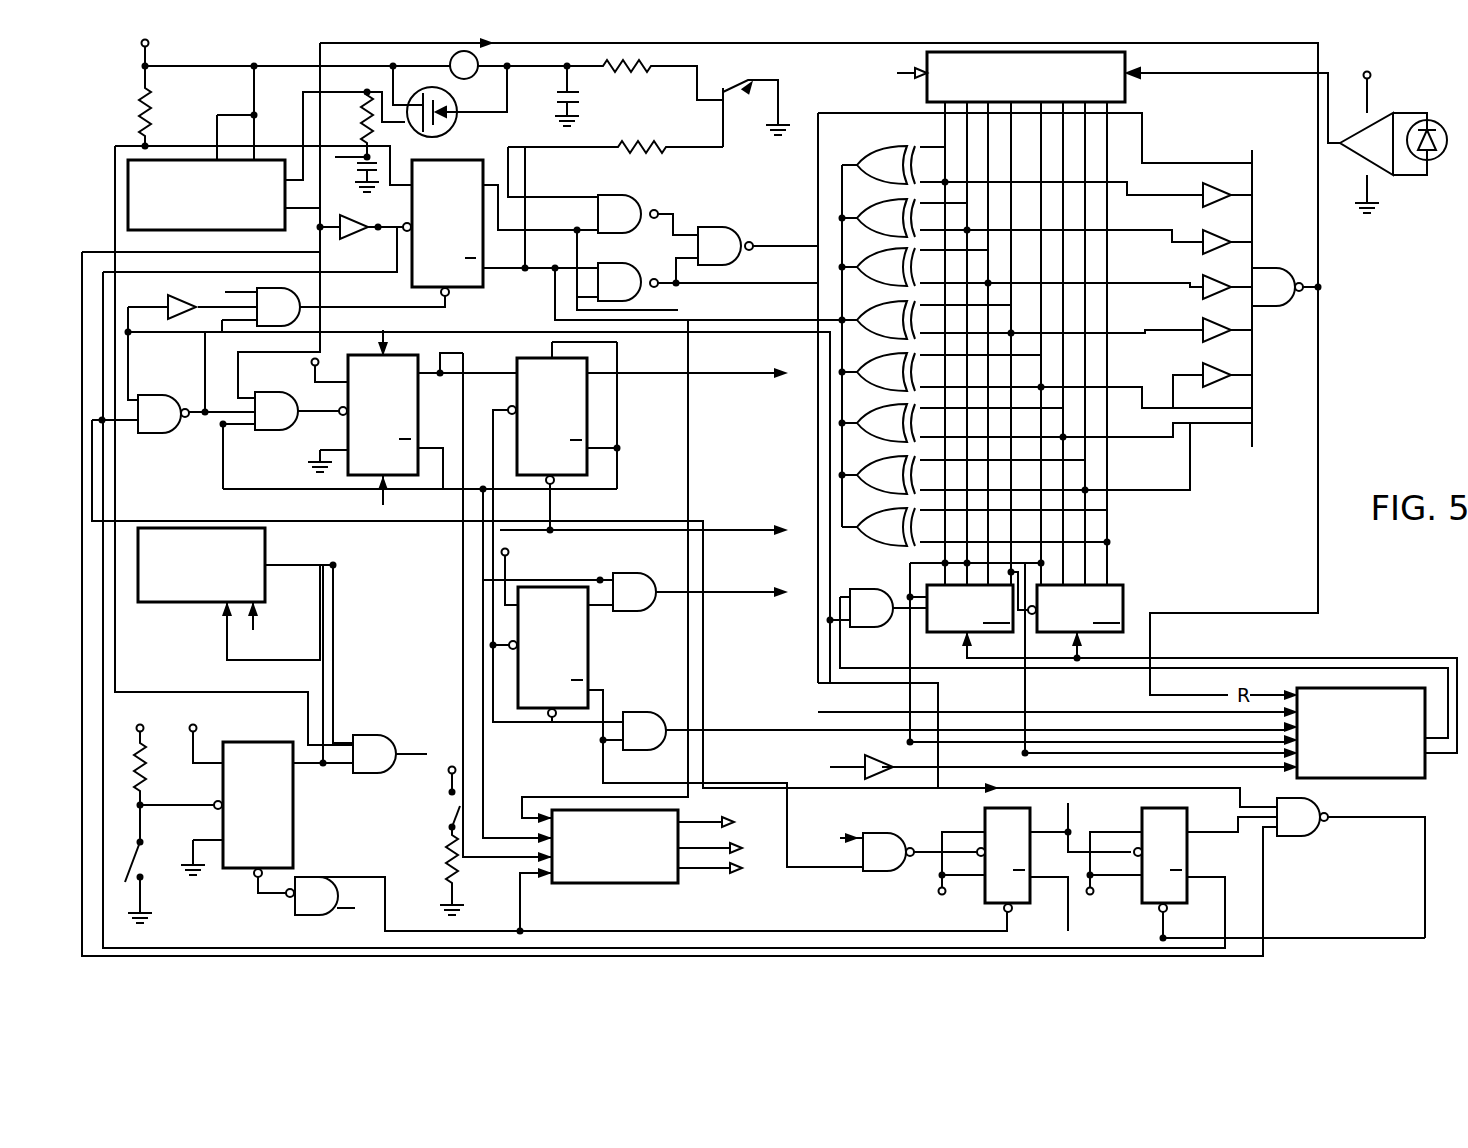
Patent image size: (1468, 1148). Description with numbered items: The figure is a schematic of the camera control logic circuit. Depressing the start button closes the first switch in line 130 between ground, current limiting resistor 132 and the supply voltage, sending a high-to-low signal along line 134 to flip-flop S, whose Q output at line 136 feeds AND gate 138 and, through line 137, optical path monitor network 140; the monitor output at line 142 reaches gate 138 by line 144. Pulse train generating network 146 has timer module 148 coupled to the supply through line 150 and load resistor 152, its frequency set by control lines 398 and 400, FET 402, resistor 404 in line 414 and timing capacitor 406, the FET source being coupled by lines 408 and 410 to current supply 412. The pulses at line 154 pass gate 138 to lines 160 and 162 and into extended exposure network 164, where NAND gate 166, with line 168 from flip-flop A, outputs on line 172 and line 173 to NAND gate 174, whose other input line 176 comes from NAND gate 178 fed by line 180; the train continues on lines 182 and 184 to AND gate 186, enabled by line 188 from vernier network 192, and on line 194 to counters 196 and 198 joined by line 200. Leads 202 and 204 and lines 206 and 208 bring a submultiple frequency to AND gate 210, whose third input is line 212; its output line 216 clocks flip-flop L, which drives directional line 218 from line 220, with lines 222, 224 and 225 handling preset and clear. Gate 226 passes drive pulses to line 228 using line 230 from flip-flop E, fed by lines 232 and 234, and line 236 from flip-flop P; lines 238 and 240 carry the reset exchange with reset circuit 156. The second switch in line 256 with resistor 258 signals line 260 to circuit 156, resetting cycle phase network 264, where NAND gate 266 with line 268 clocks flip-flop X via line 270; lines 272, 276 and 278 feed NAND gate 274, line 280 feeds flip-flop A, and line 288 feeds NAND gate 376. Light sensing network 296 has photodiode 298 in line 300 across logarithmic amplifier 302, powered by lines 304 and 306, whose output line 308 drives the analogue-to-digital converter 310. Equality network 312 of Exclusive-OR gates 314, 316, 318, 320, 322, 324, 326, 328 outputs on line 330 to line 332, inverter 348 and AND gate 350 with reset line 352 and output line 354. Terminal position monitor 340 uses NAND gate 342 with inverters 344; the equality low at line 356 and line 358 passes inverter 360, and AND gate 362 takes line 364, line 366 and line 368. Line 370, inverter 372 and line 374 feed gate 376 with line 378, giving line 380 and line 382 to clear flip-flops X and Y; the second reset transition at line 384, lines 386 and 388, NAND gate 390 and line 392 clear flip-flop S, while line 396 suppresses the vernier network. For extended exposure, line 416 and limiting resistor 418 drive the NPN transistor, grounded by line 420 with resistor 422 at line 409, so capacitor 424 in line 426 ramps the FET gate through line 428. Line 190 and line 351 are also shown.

The line 130 is at (145, 815).
The current limiting resistor 132 is at (157, 763).
The line 134 is at (158, 808).
The line 136 is at (328, 768).
The line 137 is at (272, 660).
The AND gate 138 is at (375, 772).
The optical path monitor network 140 is at (195, 605).
The line 142 is at (296, 568).
The line 144 is at (332, 580).
The pulse train generating network 146 is at (118, 118).
The timer module 148 is at (188, 158).
The line 150 is at (255, 98).
The load resistor 152 is at (157, 98).
The line 154 is at (115, 160).
The reset circuit 156 is at (625, 885).
The line 160 is at (708, 870).
The line 162 is at (500, 298).
The extended exposure control network 164 is at (516, 145).
The NAND gate 166 is at (640, 290).
The line 168 is at (508, 205).
The line 172 is at (756, 300).
The line 173 is at (672, 262).
The NAND gate 174 is at (760, 257).
The line 176 is at (680, 212).
The NAND gate 178 is at (628, 200).
The line 180 is at (555, 240).
The line 182 is at (760, 238).
The line 184 is at (838, 625).
The AND gate 186 is at (878, 595).
The line 188 is at (1380, 668).
The feedback line 190 is at (1450, 755).
The vernier network 192 is at (1338, 685).
The line 194 is at (900, 615).
The counter 196 is at (976, 608).
The counter 198 is at (1072, 601).
The line 200 is at (1209, 692).
The lead 202 is at (918, 630).
The lead 204 is at (935, 555).
The line 206 is at (975, 740).
The line 208 is at (938, 740).
The AND gate 210 is at (660, 705).
The line 212 is at (618, 449).
The line 216 is at (558, 724).
The line 218 is at (742, 380).
The line 220 is at (462, 378).
The line 222 is at (598, 445).
The line 224 is at (218, 365).
The line 225 is at (555, 500).
The AND gate 226 is at (628, 572).
The line 228 is at (738, 596).
The line 230 is at (608, 612).
The line 232 is at (510, 568).
The line 234 is at (490, 646).
The line 236 is at (432, 448).
The line 238 is at (486, 795).
The line 240 is at (692, 822).
The line 256 is at (450, 776).
The resistor 258 is at (450, 862).
The line 260 is at (518, 858).
The cycle phase network 264 is at (940, 785).
The NAND gate 266 is at (890, 870).
The line 268 is at (606, 660).
The line 270 is at (920, 845).
The line 272 is at (118, 522).
The NAND gate 274 is at (150, 435).
The line 276 is at (1048, 832).
The line 278 is at (105, 470).
The line 280 is at (108, 365).
The line 288 is at (1202, 822).
The light sensing network 296 is at (1405, 235).
The silicon photodiode 298 is at (1410, 115).
The line 300 is at (1438, 100).
The logarithmic amplifier 302 is at (1365, 140).
The line 304 is at (1358, 95).
The line 306 is at (1378, 193).
The line 308 is at (1200, 80).
The analogue-to-digital converter 310 is at (1133, 72).
The equality network 312 is at (868, 145).
The Exclusive-OR gate 314 is at (1022, 170).
The Exclusive-OR gate 316 is at (1021, 220).
The Exclusive-OR gate 318 is at (1021, 267).
The Exclusive-OR gate 320 is at (1022, 320).
The Exclusive-OR gate 322 is at (1046, 380).
The Exclusive-OR gate 324 is at (1046, 423).
The Exclusive-OR gate 326 is at (1015, 458).
The Exclusive-OR gate 328 is at (976, 527).
The line 330 is at (760, 330).
The line 332 is at (160, 303).
The terminal position monitor network 340 is at (1280, 160).
The NAND gate 342 is at (1266, 268).
The inverters 344 is at (1230, 440).
The inverter 348 is at (185, 280).
The AND gate 350 is at (300, 290).
The line 351 is at (213, 335).
The line 352 is at (242, 292).
The line 354 is at (388, 314).
The line 356 is at (212, 408).
The line 358 is at (222, 490).
The inverter 360 is at (795, 730).
The AND gate 362 is at (280, 432).
The line 364 is at (238, 360).
The line 366 is at (238, 428).
The line 368 is at (338, 411).
The line 370 is at (320, 262).
The inverter 372 is at (378, 232).
The line 374 is at (82, 250).
The NAND gate 376 is at (1318, 803).
The line 378 is at (438, 348).
The line 380 is at (1378, 815).
The line 382 is at (1160, 940).
The line 384 is at (702, 870).
The line 386 is at (560, 930).
The line 388 is at (521, 897).
The NAND gate 390 is at (308, 877).
The line 392 is at (278, 898).
The line 396 is at (598, 262).
The line 398 is at (298, 158).
The line 400 is at (300, 212).
The enhancement mode P channel MOS FET 402 is at (458, 90).
The resistor 404 is at (353, 108).
The timing capacitor 406 is at (382, 168).
The line 408 is at (398, 78).
The line 409 is at (570, 64).
The line 410 is at (270, 64).
The current supply 412 is at (480, 58).
The line 414 is at (362, 146).
The line 416 is at (548, 148).
The limiting resistor 418 is at (645, 142).
The line 420 is at (782, 85).
The resistor 422 is at (615, 60).
The capacitor 424 is at (585, 103).
The line 426 is at (585, 92).
The line 428 is at (562, 94).